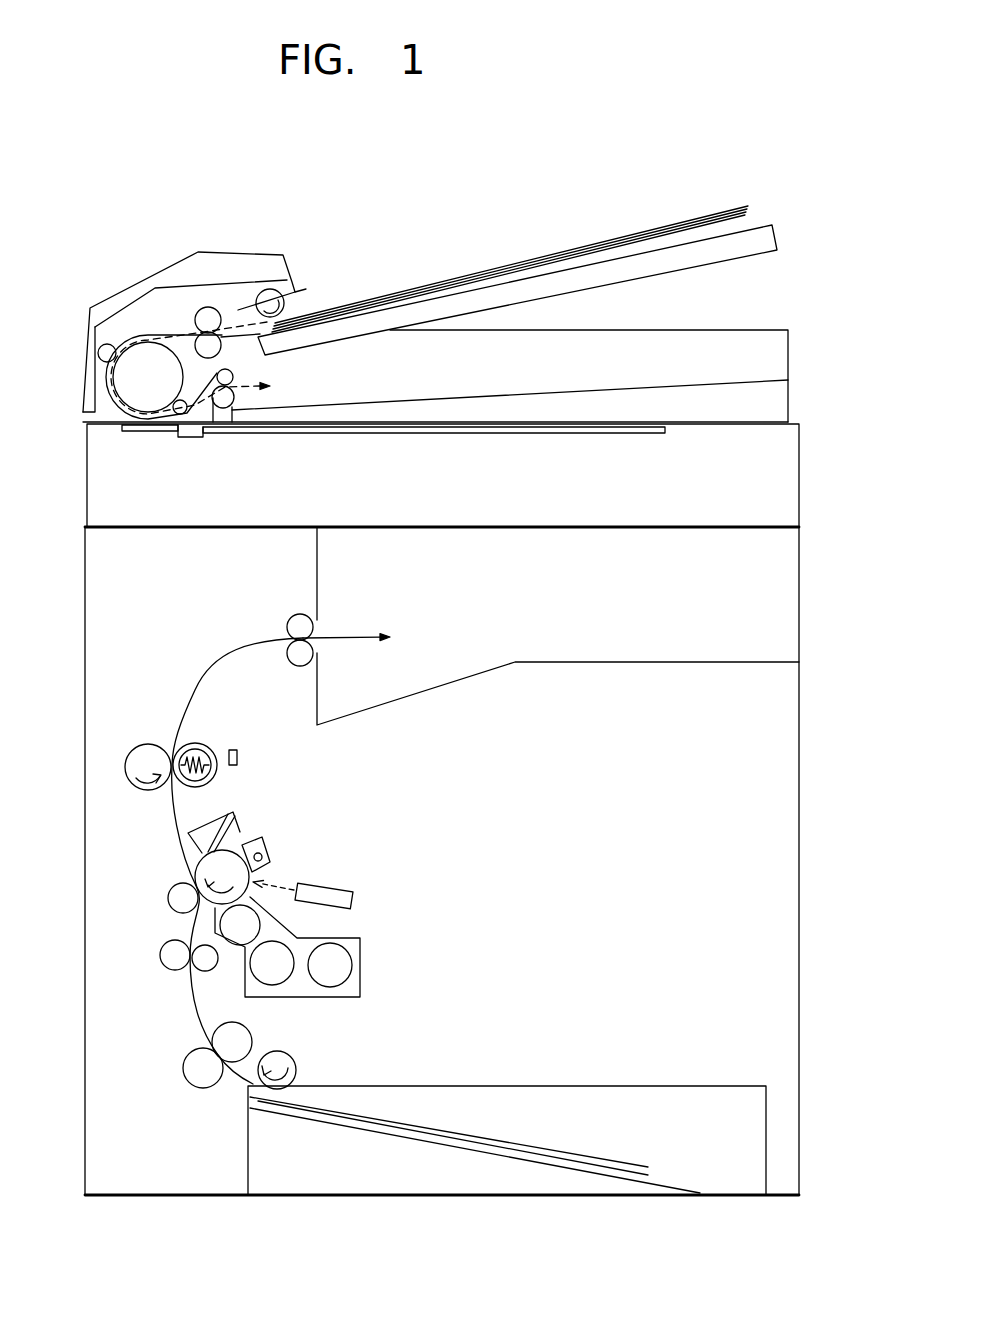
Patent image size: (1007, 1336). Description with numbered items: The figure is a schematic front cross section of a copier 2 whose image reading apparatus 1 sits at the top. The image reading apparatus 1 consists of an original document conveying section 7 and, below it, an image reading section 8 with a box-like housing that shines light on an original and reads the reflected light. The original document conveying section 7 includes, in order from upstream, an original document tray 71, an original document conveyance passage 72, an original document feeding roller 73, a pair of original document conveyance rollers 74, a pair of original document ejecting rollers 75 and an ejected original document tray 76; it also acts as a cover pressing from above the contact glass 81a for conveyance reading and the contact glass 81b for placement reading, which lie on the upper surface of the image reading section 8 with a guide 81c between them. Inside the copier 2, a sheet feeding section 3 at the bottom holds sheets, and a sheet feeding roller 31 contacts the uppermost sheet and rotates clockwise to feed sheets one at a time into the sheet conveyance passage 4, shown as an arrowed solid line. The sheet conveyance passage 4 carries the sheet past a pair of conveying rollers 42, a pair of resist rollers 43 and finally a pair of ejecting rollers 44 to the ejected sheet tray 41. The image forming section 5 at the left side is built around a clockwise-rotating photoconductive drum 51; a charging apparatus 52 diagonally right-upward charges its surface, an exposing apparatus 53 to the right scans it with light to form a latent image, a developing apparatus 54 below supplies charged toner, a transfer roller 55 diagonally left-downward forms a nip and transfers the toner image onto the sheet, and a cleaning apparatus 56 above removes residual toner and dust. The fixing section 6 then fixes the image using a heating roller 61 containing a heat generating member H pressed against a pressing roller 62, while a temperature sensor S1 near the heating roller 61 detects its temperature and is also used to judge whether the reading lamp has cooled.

The image reading apparatus 1 is at (491, 350).
The copier 2 is at (100, 247).
The sheet feeding section 3 is at (440, 1123).
The sheet conveyance passage 4 is at (177, 666).
The image forming section 5 is at (274, 885).
The fixing section 6 is at (146, 737).
The original document conveying section 7 is at (469, 298).
The image reading section 8 is at (814, 496).
The sheet feeding roller 31 is at (297, 1063).
The ejected sheet tray 41 is at (500, 660).
The pair of conveying rollers 42 is at (195, 1075).
The pair of resist rollers 43 is at (162, 955).
The pair of ejecting rollers 44 is at (293, 620).
The photoconductive drum 51 is at (230, 851).
The charging apparatus 52 is at (265, 852).
The exposing apparatus 53 is at (333, 900).
The developing apparatus 54 is at (363, 963).
The transfer roller 55 is at (178, 897).
The cleaning apparatus 56 is at (218, 815).
The heating roller 61 is at (219, 738).
The pressing roller 62 is at (145, 757).
The heat generating member H is at (207, 743).
The temperature sensor S1 is at (240, 753).
The original document tray 71 is at (762, 236).
The original document conveyance passage 72 is at (132, 338).
The original document feeding roller 73 is at (284, 298).
The pair of original document conveyance rollers 74 is at (206, 307).
The pair of original document ejecting rollers 75 is at (236, 394).
The ejected original document tray 76 is at (448, 398).
The contact glass for conveyance reading 81a is at (143, 433).
The contact glass for placement reading 81b is at (512, 433).
The guide 81c is at (190, 438).